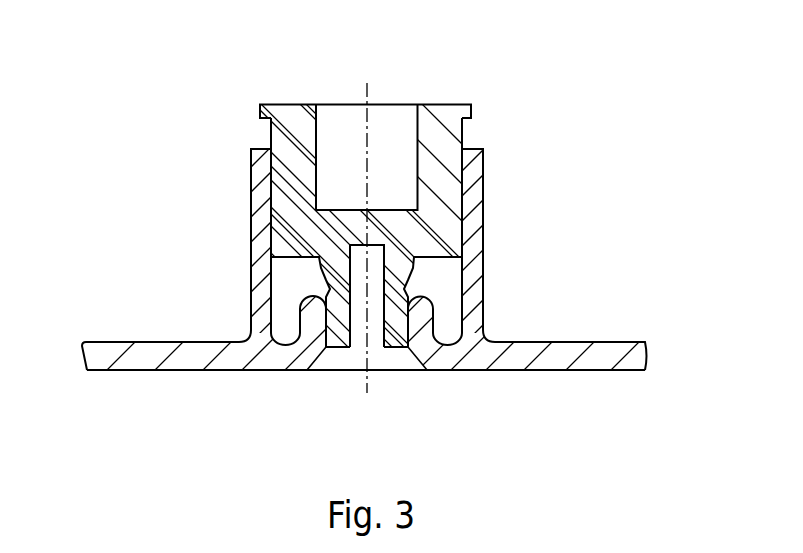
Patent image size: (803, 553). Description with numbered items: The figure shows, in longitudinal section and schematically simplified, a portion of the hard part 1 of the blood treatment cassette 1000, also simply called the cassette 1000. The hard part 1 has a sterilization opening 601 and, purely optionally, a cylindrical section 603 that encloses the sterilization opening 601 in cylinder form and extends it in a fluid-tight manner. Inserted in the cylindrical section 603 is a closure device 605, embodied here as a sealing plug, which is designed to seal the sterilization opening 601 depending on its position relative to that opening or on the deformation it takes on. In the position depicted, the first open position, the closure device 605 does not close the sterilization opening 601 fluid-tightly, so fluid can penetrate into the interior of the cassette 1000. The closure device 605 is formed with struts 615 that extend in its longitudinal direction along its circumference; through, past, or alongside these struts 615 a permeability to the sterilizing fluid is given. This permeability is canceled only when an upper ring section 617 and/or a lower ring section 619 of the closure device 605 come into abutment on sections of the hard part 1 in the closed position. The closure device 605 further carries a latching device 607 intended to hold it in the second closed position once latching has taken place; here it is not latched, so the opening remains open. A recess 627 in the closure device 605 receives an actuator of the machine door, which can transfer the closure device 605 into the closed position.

The blood treatment cassette 1000 is at (211, 262).
The hard part 1 is at (613, 353).
The sterilization opening 601 is at (353, 361).
The cylindrical section 603 is at (472, 177).
The closure device 605 is at (387, 80).
The latching device 607 is at (420, 313).
The struts 615 is at (290, 158).
The upper ring section 617 is at (472, 110).
The lower ring section 619 is at (413, 262).
The recess 627 is at (411, 151).